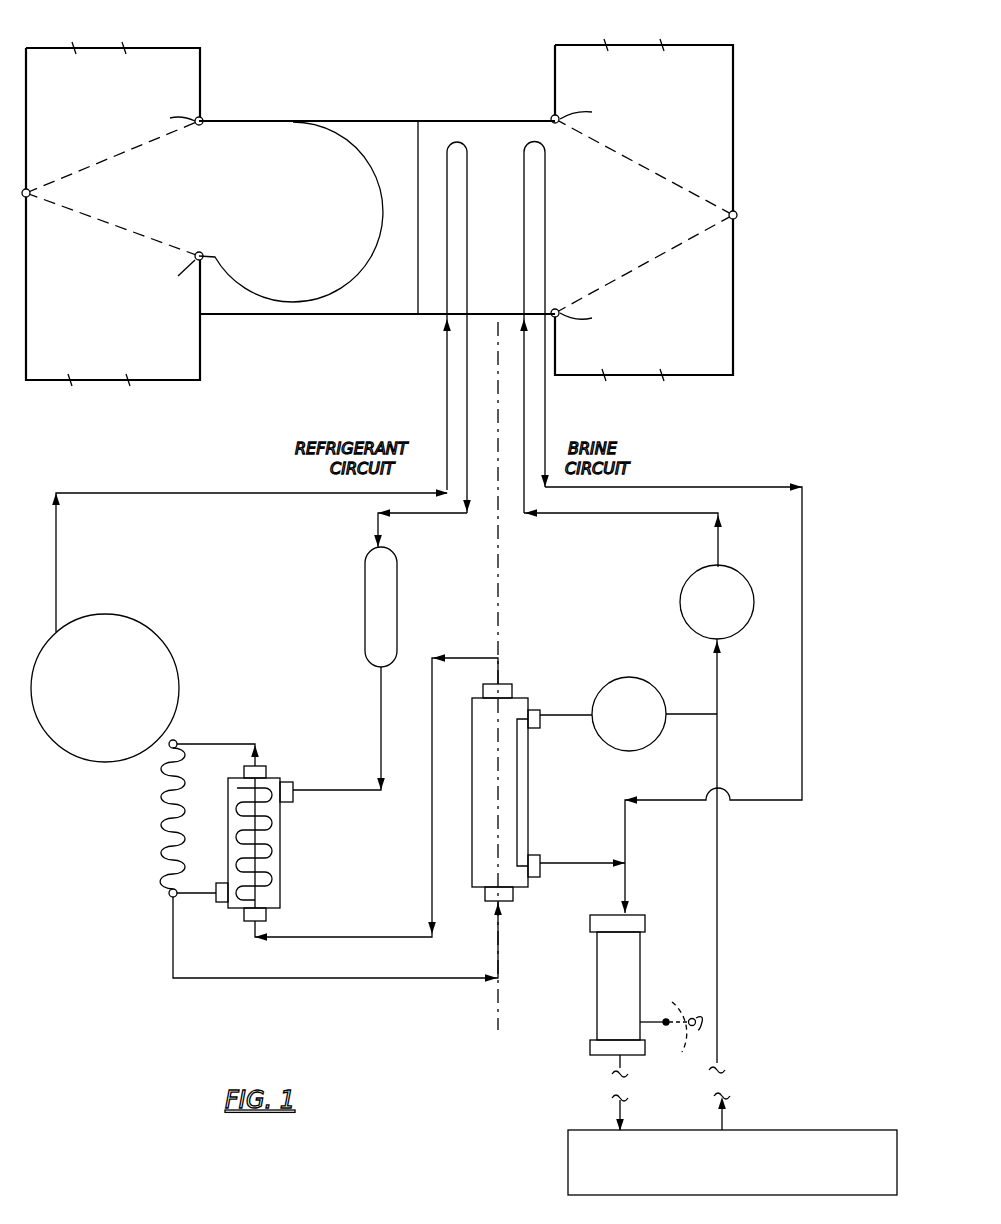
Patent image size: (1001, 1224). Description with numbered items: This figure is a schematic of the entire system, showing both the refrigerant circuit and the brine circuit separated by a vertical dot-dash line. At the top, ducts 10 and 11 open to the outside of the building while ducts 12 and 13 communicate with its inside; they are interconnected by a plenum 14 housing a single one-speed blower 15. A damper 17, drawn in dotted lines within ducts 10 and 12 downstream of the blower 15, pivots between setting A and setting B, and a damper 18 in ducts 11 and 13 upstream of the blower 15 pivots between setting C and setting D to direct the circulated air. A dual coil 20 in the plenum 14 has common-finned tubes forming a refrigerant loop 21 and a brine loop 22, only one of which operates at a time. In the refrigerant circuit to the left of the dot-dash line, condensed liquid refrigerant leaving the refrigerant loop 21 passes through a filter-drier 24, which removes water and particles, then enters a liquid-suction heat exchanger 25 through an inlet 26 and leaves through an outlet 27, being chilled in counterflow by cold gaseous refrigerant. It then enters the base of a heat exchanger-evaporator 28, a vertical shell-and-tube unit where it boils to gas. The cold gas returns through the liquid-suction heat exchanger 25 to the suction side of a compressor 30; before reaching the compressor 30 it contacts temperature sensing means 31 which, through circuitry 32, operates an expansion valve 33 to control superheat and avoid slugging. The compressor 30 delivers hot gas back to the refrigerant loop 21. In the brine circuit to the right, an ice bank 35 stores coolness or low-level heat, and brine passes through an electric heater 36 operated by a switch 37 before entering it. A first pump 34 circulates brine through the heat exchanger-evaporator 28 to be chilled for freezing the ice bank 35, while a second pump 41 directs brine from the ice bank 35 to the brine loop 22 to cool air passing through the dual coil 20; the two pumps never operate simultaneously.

The duct 10 is at (113, 103).
The duct 11 is at (644, 114).
The duct 12 is at (113, 305).
The duct 13 is at (644, 316).
The plenum 14 is at (370, 121).
The blower 15 is at (291, 212).
The damper 17 is at (122, 153).
The damper 18 is at (637, 152).
The dual coil 20 is at (508, 121).
The refrigerant loop 21 is at (440, 282).
The brine loop 22 is at (545, 237).
The filter-drier 24 is at (397, 597).
The liquid-suction heat exchanger 25 is at (280, 888).
The inlet 26 is at (293, 782).
The outlet 27 is at (220, 902).
The heat exchanger-evaporator 28 is at (477, 868).
The compressor 30 is at (105, 688).
The temperature sensing means 31 is at (178, 740).
The circuitry 32 is at (162, 819).
The expansion valve 33 is at (167, 893).
The brine pump 34 is at (628, 705).
The ice bank 35 is at (788, 1130).
The electric heater 36 is at (597, 972).
The switch 37 is at (688, 1050).
The second pump 41 is at (687, 602).